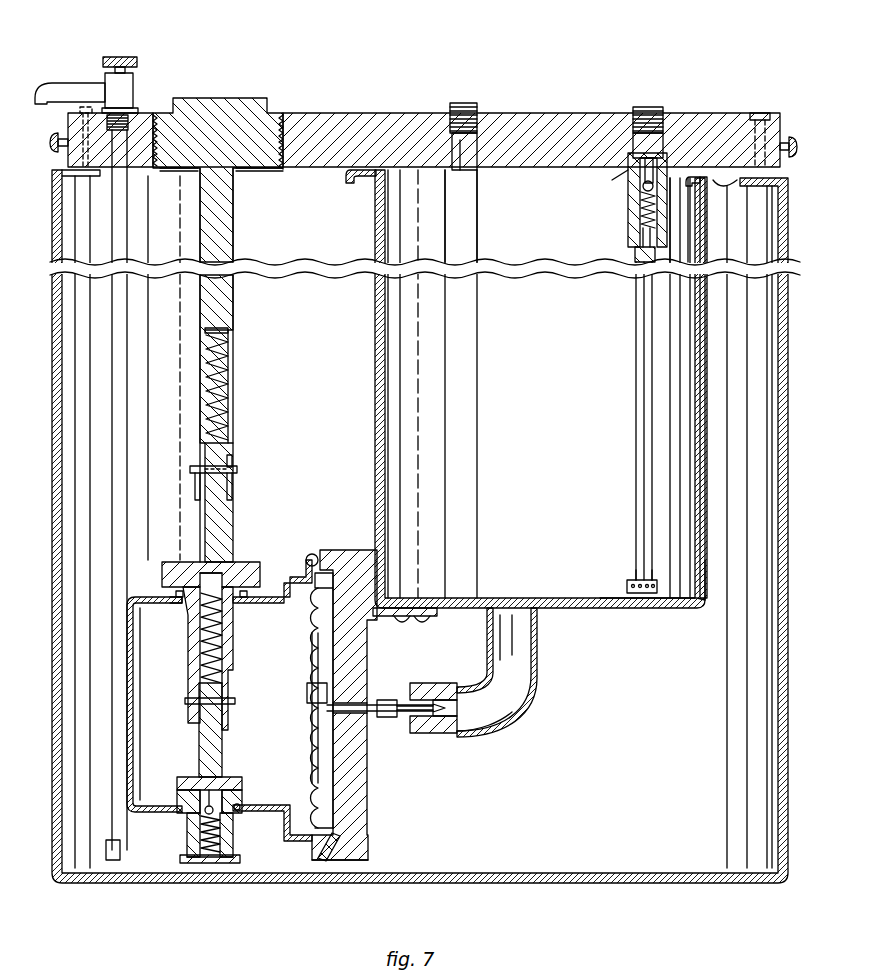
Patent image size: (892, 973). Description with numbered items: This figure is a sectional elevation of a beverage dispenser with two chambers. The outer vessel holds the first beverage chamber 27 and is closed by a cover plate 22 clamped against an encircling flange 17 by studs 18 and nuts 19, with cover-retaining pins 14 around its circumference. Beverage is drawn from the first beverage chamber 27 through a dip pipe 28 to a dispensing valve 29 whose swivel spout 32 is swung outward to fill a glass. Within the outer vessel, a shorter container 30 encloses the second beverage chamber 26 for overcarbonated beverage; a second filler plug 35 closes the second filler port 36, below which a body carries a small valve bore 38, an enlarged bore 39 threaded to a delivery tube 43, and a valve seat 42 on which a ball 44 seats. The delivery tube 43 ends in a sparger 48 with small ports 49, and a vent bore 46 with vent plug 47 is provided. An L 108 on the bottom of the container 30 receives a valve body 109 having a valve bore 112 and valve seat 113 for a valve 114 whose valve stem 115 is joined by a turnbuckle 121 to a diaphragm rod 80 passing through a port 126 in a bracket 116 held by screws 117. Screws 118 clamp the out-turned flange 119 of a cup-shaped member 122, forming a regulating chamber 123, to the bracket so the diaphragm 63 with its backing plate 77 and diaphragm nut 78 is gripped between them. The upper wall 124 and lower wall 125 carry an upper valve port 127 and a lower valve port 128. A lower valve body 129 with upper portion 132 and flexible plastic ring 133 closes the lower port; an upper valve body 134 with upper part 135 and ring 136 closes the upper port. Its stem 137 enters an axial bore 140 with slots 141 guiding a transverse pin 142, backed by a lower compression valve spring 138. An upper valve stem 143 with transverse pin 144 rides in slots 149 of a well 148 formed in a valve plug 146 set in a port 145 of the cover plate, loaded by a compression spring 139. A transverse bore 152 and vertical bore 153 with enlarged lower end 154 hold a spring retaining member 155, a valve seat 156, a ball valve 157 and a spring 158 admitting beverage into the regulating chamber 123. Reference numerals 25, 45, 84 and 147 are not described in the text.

The cover-retaining pins 14 is at (52, 143).
The encircling flange 17 is at (755, 182).
The studs 18 is at (757, 112).
The nuts 19 is at (770, 113).
The cover plate 22 is at (372, 125).
The flange of inner vessel 25 is at (355, 182).
The second beverage chamber 26 is at (430, 388).
The first beverage chamber 27 is at (637, 835).
The dip pipe 28 is at (118, 367).
The dispensing valve 29 is at (130, 83).
The container 30 is at (662, 608).
The swivel spout 32 is at (72, 85).
The second filler plug 35 is at (648, 107).
The second filler port 36 is at (668, 160).
The small valve bore 38 is at (625, 170).
The enlarged bore 39 is at (645, 210).
The valve seat 42 is at (645, 172).
The delivery tube 43 is at (643, 340).
The ball 44 is at (642, 188).
The spring seat plug 45 is at (640, 247).
The vent bore 46 is at (470, 160).
The vent plug 47 is at (465, 103).
The sparger 48 is at (630, 578).
The small ports 49 is at (626, 588).
The diaphragm 63 is at (330, 785).
The diaphragm backing plate 77 is at (318, 725).
The diaphragm nut 78 is at (305, 680).
The diaphragm rod 80 is at (380, 703).
The lever 84 is at (340, 834).
The L 108 is at (537, 672).
The valve body 109 is at (455, 736).
The valve bore 112 is at (425, 733).
The valve seat 113 is at (440, 685).
The valve 114 is at (457, 708).
The valve stem 115 is at (405, 707).
The bracket 116 is at (350, 810).
The screws 117 is at (410, 622).
The screws 118 is at (305, 862).
The out-turned flange 119 is at (322, 555).
The turnbuckle 121 is at (385, 717).
The cup-shaped member 122 is at (127, 715).
The regulating chamber 123 is at (150, 645).
The upper wall 124 is at (147, 593).
The lower wall 125 is at (270, 808).
The port 126 is at (350, 735).
The upper valve port 127 is at (240, 606).
The lower valve port 128 is at (187, 825).
The lower valve body 129 is at (187, 843).
The upper portion 132 is at (230, 790).
The flexible plastic ring 133 is at (240, 805).
The upper valve body 134 is at (237, 630).
The upper part 135 is at (240, 565).
The flexible plastic ring 136 is at (285, 597).
The stem 137 is at (200, 735).
The lower compression valve spring 138 is at (200, 573).
The compression spring 139 is at (228, 332).
The axial bore 140 is at (203, 615).
The slots 141 is at (190, 690).
The transverse pin 142 is at (185, 700).
The upper valve stem 143 is at (213, 510).
The transverse pin 144 is at (237, 470).
The port 145 is at (170, 170).
The valve plug 146 is at (245, 100).
The column 147 is at (230, 228).
The well 148 is at (224, 387).
The slots 149 is at (232, 462).
The transverse bore 152 is at (180, 787).
The vertical bore 153 is at (178, 800).
The lower end 154 is at (195, 823).
The spring retaining member 155 is at (222, 863).
The valve seat 156 is at (213, 803).
The ball valve 157 is at (238, 812).
The spring 158 is at (208, 845).